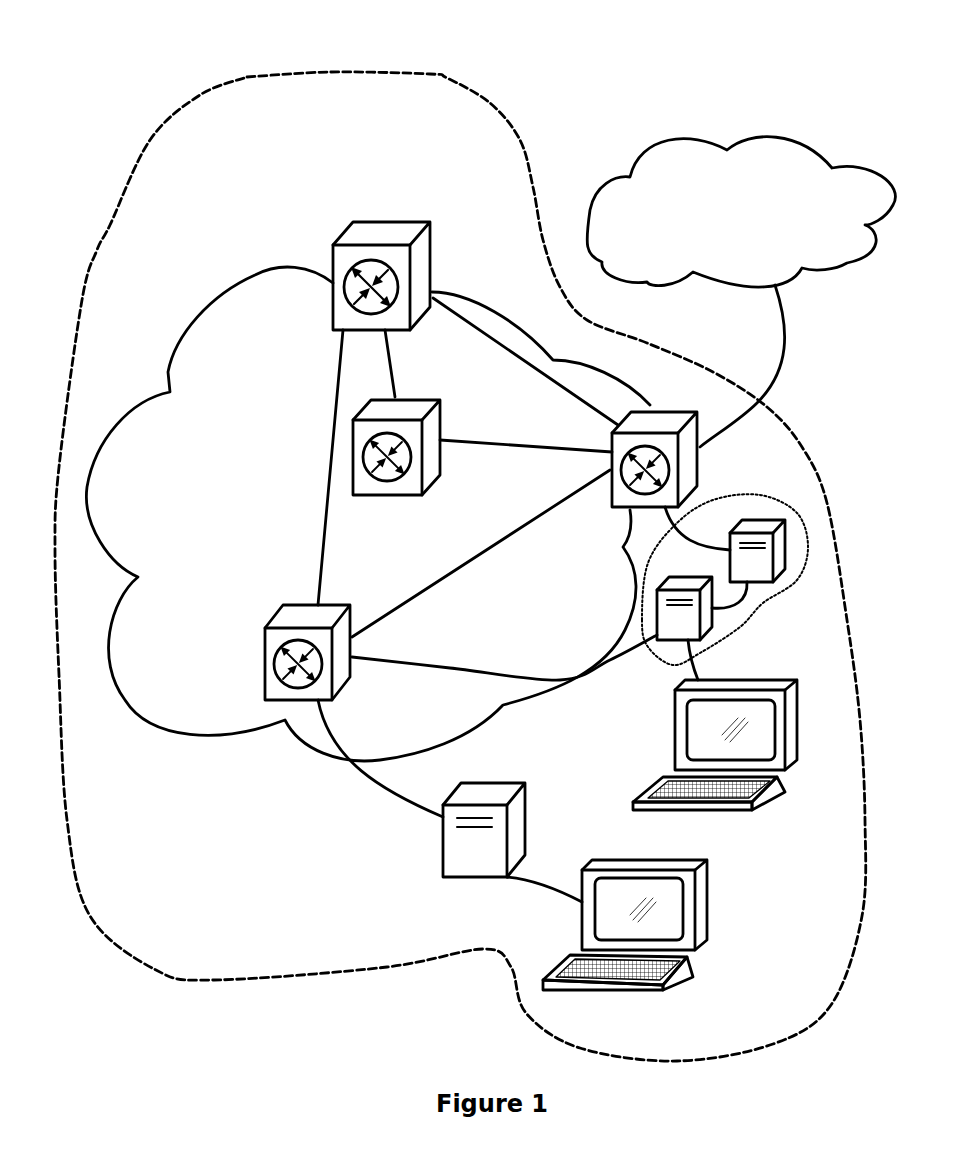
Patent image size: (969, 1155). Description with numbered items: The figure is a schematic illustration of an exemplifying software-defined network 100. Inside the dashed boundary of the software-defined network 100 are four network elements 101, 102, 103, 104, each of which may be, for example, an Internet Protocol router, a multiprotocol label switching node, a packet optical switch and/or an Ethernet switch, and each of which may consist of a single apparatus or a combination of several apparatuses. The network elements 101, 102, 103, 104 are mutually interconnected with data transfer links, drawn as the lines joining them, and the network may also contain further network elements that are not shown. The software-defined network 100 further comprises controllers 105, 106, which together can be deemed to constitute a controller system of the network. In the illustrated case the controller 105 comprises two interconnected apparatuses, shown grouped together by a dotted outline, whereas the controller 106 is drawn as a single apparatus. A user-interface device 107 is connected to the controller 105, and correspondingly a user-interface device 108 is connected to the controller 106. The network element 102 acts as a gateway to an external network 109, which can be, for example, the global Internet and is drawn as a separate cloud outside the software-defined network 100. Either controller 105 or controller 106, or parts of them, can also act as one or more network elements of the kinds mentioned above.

The software-defined network 100 is at (249, 77).
The network element 101 is at (340, 240).
The network element 102 is at (417, 395).
The network element 103 is at (265, 685).
The network element 104 is at (627, 508).
The controller 105 is at (662, 660).
The controller 106 is at (472, 790).
The user-interface device 107 is at (775, 677).
The user-interface device 108 is at (707, 890).
The external network 109 is at (757, 221).